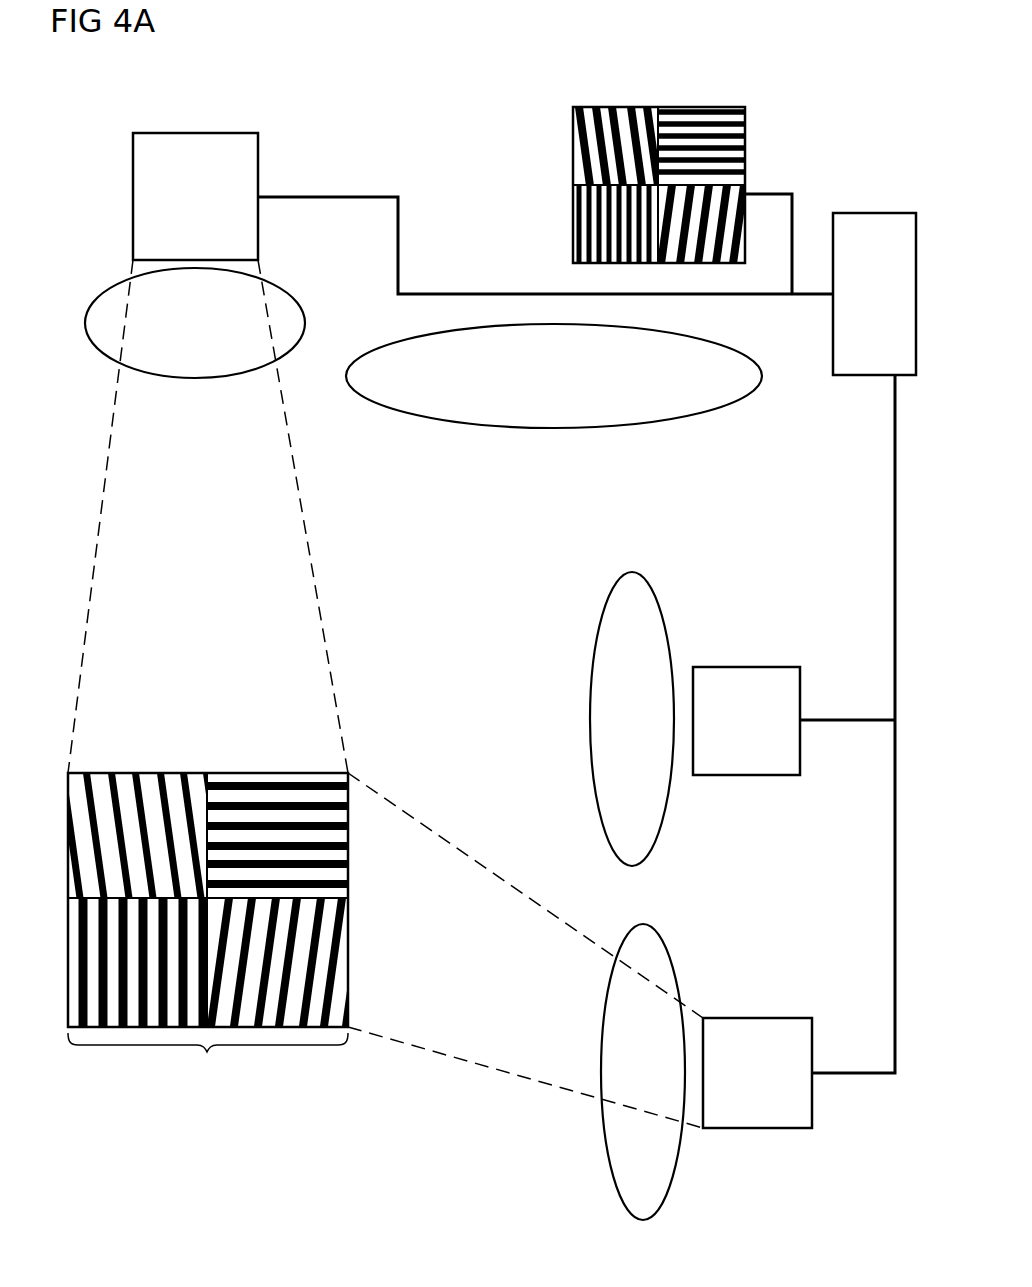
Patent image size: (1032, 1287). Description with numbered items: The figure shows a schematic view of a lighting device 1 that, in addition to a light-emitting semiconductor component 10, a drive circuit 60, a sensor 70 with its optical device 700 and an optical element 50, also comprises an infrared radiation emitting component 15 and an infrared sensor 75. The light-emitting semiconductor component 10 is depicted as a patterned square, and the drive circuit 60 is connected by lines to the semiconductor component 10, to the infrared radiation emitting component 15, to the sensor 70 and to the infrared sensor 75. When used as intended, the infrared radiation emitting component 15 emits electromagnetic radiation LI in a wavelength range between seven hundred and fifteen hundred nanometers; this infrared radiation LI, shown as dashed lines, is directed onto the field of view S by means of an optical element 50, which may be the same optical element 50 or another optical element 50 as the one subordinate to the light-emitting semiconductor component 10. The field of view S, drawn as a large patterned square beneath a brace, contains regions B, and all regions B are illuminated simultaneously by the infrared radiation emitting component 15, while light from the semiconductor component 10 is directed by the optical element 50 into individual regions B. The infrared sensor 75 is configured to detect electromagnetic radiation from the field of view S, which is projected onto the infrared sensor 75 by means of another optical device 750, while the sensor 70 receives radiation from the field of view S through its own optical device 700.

The lighting device 1 is at (556, 88).
The light-emitting semiconductor component 10 is at (548, 176).
The infrared radiation emitting component 15 is at (191, 148).
The optical element 50 is at (103, 302).
The drive circuit 60 is at (876, 228).
The sensor 70 is at (763, 760).
The optical device 700 is at (642, 821).
The infrared sensor 75 is at (775, 1110).
The optical device 750 is at (652, 1173).
The region B is at (87, 958).
The field of view S is at (208, 1062).
The electromagnetic radiation LI is at (377, 694).